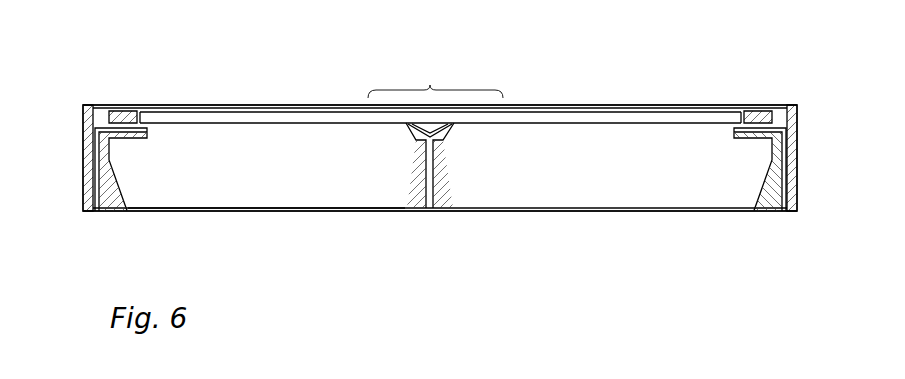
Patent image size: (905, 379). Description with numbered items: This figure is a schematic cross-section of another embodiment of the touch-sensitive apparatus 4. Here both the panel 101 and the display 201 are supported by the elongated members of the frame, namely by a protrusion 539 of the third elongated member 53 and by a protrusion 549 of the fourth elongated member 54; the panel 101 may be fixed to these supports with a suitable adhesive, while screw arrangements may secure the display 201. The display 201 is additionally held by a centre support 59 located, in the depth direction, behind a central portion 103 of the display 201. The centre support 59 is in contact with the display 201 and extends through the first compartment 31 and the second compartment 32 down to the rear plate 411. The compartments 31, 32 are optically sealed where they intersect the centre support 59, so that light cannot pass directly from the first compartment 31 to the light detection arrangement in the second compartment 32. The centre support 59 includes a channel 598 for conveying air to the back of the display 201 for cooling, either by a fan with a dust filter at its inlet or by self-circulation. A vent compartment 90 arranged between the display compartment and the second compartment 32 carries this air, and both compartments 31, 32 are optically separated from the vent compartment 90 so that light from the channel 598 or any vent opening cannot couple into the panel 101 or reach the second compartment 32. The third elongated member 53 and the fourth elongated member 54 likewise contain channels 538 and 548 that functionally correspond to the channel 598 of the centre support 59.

The apparatus 4 is at (668, 72).
The panel 101 is at (228, 106).
The display 201 is at (313, 115).
The central portion 103 is at (435, 79).
The protrusion 549 is at (141, 111).
The protrusion 539 is at (743, 108).
The fourth elongated member 54 is at (87, 162).
The third elongated member 53 is at (799, 165).
The channel 548 is at (102, 200).
The channel 538 is at (783, 210).
The first compartment 31 is at (209, 188).
The second compartment 32 is at (263, 148).
The vent compartment 90 is at (332, 130).
The centre support 59 is at (415, 200).
The channel 598 is at (437, 200).
The rear plate 411 is at (542, 208).